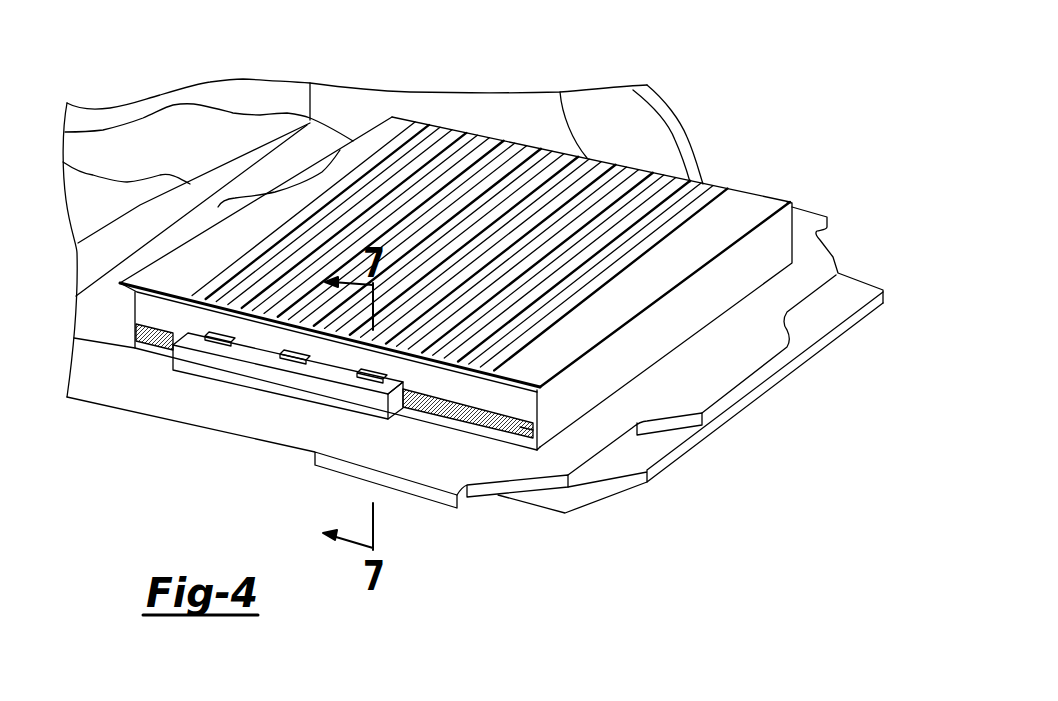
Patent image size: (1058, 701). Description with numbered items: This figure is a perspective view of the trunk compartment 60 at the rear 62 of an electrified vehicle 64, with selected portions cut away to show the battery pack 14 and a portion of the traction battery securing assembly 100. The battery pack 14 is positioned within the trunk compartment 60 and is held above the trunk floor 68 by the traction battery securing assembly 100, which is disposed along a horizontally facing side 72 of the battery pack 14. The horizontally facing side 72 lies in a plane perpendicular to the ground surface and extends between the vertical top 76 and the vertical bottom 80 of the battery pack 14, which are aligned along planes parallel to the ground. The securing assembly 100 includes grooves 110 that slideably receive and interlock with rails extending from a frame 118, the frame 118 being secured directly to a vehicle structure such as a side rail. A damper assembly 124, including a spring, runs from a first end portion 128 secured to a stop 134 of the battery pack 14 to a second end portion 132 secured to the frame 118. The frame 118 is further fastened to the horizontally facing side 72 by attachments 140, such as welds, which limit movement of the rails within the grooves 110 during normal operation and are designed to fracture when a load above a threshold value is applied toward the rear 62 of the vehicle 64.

The battery pack 14 is at (733, 197).
The trunk compartment 60 is at (214, 155).
The rear 62 is at (758, 432).
The electrified vehicle 64 is at (598, 120).
The trunk floor 68 is at (746, 358).
The horizontally facing side 72 is at (170, 320).
The vertical top 76 is at (640, 180).
The vertical bottom 80 is at (662, 360).
The traction battery securing assembly 100 is at (203, 385).
The groove 110 is at (497, 407).
The frame 118 is at (265, 378).
The damper assembly 124 is at (473, 415).
The first end portion 128 is at (530, 428).
The second end portion 132 is at (395, 395).
The stop 134 is at (542, 425).
The attachment 140 is at (298, 350).